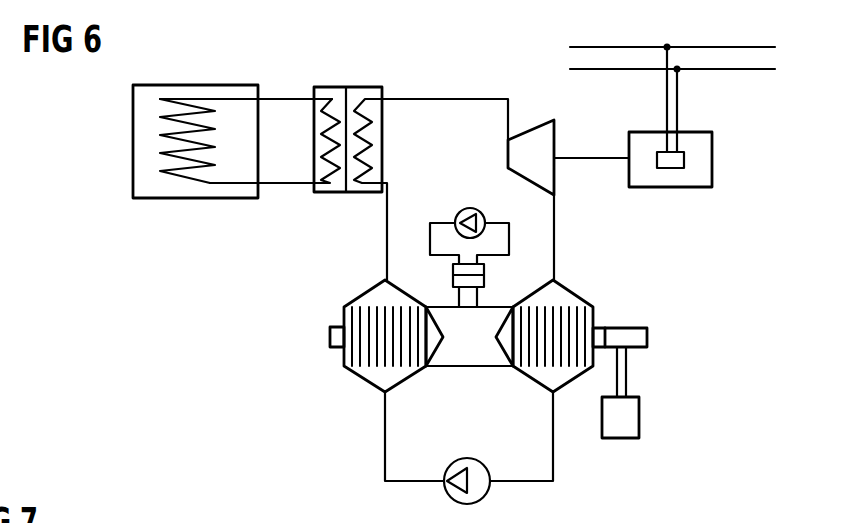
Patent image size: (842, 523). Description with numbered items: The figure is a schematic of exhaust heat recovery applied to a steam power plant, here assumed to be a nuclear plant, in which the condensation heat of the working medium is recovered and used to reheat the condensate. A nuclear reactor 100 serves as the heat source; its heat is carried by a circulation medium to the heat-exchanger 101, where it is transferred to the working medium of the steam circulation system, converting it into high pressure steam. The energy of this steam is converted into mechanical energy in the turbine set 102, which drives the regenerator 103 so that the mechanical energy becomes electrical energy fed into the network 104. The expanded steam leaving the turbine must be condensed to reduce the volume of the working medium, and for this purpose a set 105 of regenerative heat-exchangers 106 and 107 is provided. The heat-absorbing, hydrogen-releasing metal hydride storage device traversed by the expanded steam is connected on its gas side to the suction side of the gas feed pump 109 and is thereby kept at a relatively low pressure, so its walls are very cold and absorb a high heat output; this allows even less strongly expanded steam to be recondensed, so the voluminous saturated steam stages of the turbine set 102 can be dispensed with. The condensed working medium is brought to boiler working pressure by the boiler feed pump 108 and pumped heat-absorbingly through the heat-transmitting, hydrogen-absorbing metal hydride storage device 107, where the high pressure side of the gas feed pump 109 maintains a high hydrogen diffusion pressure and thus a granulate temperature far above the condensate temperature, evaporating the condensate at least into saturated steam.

The nuclear reactor 100 is at (212, 85).
The heat-exchanger 101 is at (318, 87).
The turbine set 102 is at (545, 124).
The regenerator 103 is at (662, 187).
The network 104 is at (702, 47).
The set of regenerative heat-exchangers 105 is at (336, 360).
The regenerative heat-exchanger 106 is at (596, 318).
The heat-transmitting and hydrogen-absorbing metal hydride storage device 107 is at (367, 323).
The boiler feed pump 108 is at (470, 458).
The gas feed pump 109 is at (482, 195).